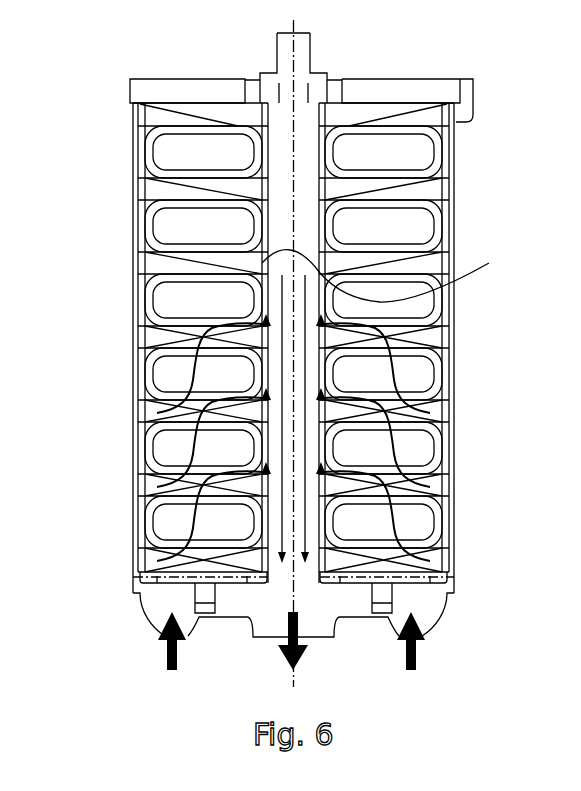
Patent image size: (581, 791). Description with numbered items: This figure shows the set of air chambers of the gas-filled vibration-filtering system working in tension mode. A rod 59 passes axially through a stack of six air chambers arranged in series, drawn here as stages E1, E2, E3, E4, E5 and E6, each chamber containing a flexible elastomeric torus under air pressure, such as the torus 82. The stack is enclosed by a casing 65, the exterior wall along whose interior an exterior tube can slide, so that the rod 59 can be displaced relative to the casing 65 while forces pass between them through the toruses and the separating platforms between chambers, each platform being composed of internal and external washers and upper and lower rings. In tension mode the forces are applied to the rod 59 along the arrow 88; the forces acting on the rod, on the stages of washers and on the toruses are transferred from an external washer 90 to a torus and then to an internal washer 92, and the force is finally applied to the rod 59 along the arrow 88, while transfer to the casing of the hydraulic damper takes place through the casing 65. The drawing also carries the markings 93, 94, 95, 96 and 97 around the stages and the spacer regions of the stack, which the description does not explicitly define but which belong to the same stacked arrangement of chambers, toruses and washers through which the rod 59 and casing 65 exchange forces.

The rod 59 is at (296, 44).
The casing 65 is at (462, 297).
The torus 82 is at (162, 524).
The arrow 88 is at (307, 653).
The external washer 90 is at (150, 560).
The internal washer 92 is at (197, 547).
The flow channel 93 is at (217, 495).
The flow channel 94 is at (340, 537).
The spacer 95 is at (150, 265).
The flow path 96 is at (389, 274).
The top spacer 97 is at (150, 117).
The cell stage 1 E1 is at (288, 522).
The cell stage 2 E2 is at (322, 448).
The cell stage 3 E3 is at (322, 374).
The cell stage 4 E4 is at (359, 300).
The cell stage 5 E5 is at (322, 226).
The cell stage 6 E6 is at (322, 152).